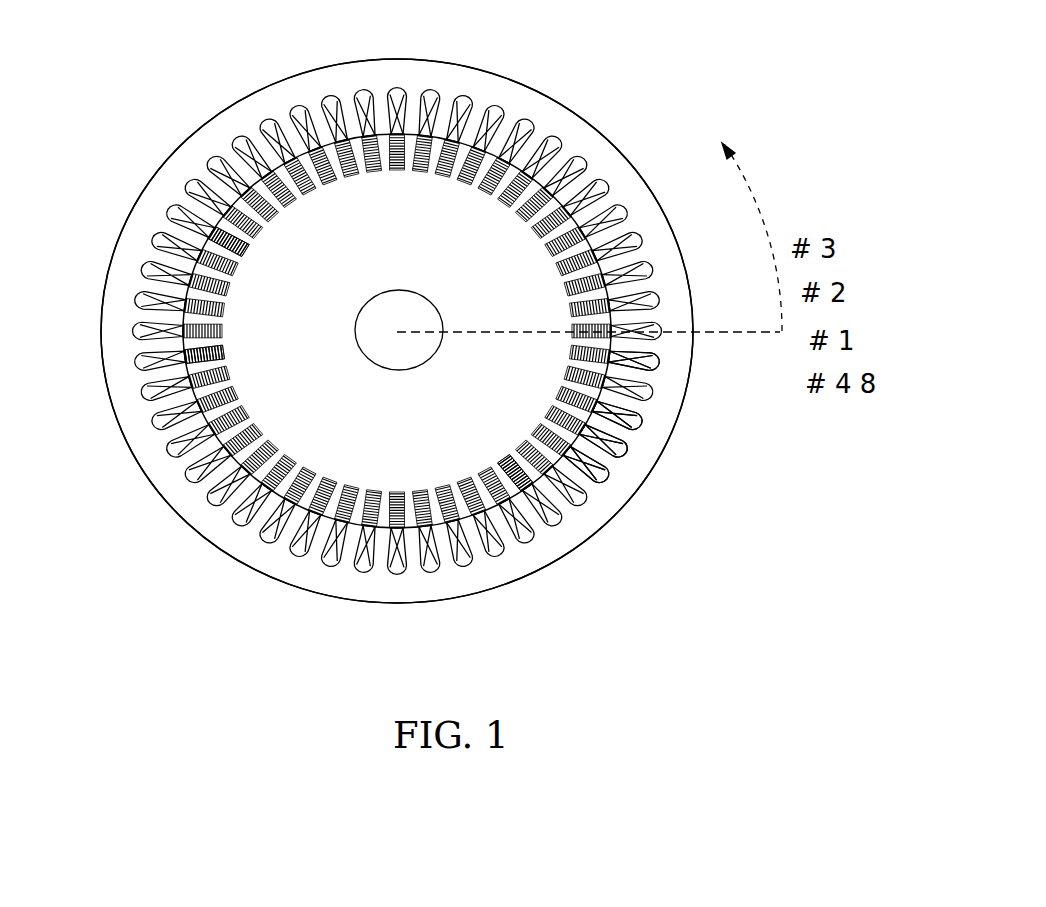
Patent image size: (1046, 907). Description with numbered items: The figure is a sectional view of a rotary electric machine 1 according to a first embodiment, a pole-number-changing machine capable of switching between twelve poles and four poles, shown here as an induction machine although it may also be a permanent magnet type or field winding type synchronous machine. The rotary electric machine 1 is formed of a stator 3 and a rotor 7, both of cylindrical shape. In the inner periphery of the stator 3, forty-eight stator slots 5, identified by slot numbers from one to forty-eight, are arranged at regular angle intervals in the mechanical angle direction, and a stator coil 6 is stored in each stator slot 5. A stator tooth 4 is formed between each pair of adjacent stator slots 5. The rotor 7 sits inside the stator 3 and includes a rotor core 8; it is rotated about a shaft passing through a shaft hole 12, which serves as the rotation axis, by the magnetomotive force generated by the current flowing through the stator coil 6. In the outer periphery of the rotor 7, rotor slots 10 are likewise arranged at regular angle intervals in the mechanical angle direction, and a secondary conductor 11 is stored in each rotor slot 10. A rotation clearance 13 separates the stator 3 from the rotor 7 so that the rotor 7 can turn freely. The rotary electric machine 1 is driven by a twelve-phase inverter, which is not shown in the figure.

The rotary electric machine 1 is at (76, 13).
The stator 3 is at (594, 126).
The stator tooth 4 is at (622, 403).
The stator slot 5 is at (633, 453).
The stator coil 6 is at (657, 363).
The rotor 7 is at (567, 457).
The rotor core 8 is at (360, 249).
The rotor slot 10 is at (506, 466).
The secondary conductor 11 is at (238, 423).
The shaft hole 12 is at (393, 371).
The rotation clearance 13 is at (200, 305).